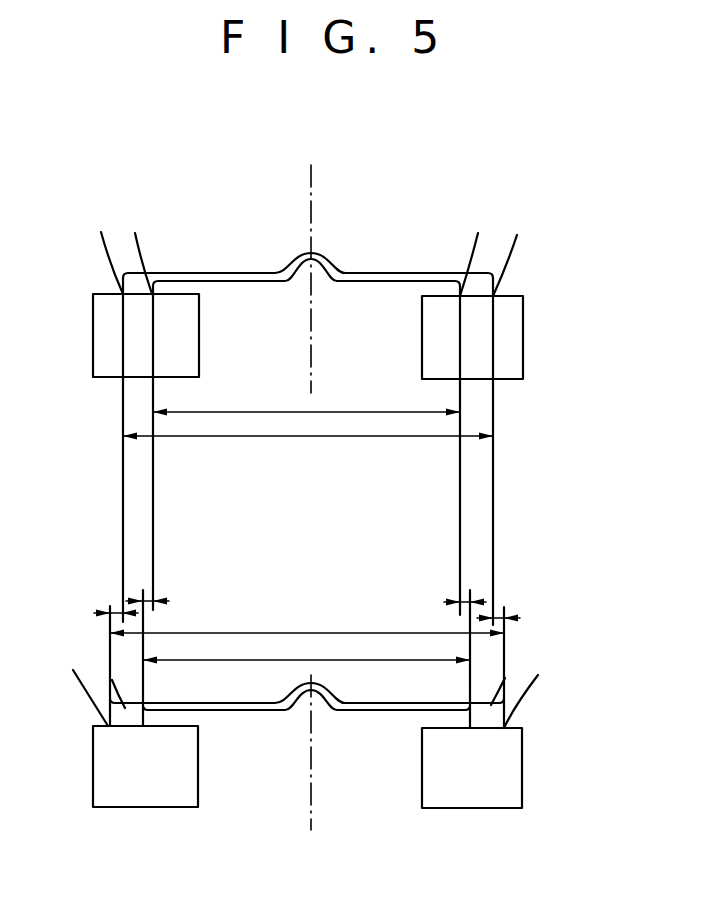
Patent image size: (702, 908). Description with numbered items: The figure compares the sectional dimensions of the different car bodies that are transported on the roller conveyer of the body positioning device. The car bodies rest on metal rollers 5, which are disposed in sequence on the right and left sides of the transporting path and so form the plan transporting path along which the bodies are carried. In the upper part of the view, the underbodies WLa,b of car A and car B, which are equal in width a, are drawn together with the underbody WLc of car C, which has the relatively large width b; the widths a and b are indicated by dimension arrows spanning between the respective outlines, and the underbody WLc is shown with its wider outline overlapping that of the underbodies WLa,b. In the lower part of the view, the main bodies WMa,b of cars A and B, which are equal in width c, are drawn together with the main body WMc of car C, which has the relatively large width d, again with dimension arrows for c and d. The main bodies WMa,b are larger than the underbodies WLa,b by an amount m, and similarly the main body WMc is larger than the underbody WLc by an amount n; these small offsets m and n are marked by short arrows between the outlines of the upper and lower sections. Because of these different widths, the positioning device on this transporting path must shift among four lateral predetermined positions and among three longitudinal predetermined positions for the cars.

The metal rollers 5 is at (93, 357).
The underbodies of cars A and B WLa,b is at (254, 283).
The underbody of car C WLc is at (377, 272).
The main bodies of cars A and B WMa,b is at (253, 712).
The main body of car C WMc is at (430, 700).
The width of underbodies of cars A and B a is at (277, 406).
The width of underbody of car C b is at (262, 438).
The width of main bodies of cars A and B c is at (260, 663).
The width of main body of car C d is at (372, 632).
The amount by which main bodies of cars A and B exceed their underbodies m is at (462, 592).
The amount by which main body of car C exceeds its underbody n is at (503, 607).